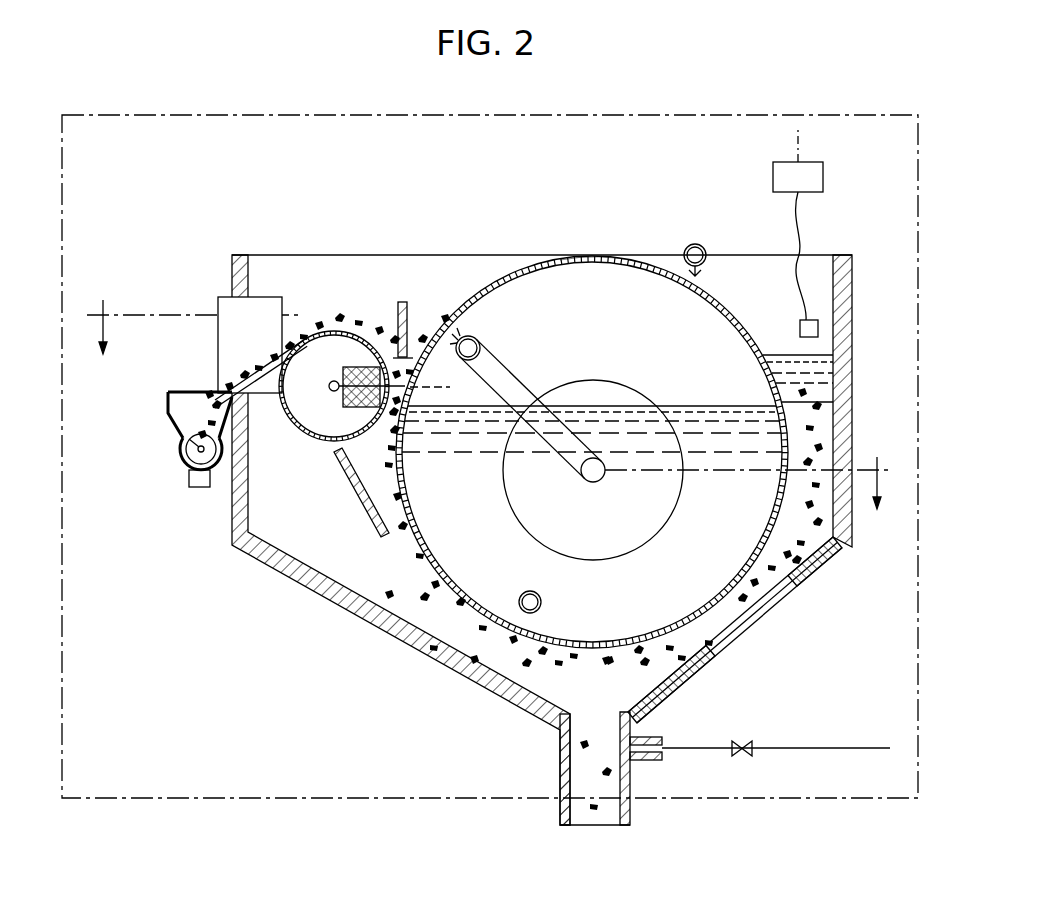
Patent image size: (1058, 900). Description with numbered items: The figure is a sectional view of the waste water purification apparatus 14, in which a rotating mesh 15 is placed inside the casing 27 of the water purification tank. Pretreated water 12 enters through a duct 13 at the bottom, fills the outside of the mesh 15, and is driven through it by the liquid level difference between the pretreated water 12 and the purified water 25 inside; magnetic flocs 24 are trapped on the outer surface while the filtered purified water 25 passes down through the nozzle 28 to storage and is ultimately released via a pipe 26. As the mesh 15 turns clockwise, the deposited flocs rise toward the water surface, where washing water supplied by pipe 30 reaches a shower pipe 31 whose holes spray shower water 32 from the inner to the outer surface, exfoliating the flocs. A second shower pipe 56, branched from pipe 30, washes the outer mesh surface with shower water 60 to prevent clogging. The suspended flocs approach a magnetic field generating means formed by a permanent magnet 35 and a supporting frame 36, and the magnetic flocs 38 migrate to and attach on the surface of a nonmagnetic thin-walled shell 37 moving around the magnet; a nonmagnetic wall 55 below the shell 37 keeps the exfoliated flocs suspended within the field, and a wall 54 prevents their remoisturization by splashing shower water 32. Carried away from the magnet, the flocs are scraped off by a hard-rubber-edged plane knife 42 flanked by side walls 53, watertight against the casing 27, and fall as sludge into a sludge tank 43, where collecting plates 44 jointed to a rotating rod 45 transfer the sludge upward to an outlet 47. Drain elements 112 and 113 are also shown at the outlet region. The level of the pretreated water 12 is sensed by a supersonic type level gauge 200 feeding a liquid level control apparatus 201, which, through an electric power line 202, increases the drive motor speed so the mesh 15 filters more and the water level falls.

The pretreated water 12 is at (595, 812).
The duct 13 is at (560, 778).
The purification apparatus 14 is at (674, 115).
The mesh 15 is at (650, 257).
The magnetic flocs 24 is at (420, 600).
The purified water 25 is at (770, 440).
The pipe 26 is at (545, 602).
The casing 27 is at (232, 262).
The nozzle 28 is at (638, 392).
The pipe 30 is at (507, 440).
The shower pipe 31 is at (487, 357).
The shower water 32 is at (480, 338).
The permanent magnet 35 is at (381, 410).
The supporting frame 36 is at (367, 407).
The thin-walled shell 37 is at (331, 382).
The magnetic flocs 38 is at (390, 350).
The plane knife 42 is at (212, 395).
The sludge tank 43 is at (168, 400).
The collecting plates 44 is at (185, 467).
The rod 45 is at (185, 448).
The outlet 47 is at (196, 490).
The side walls 53 is at (165, 315).
The wall 54 is at (408, 320).
The wall 55 is at (362, 510).
The shower pipe 56 is at (700, 245).
The shower water 60 is at (705, 272).
The valve 112 is at (745, 757).
The drain pipe 113 is at (688, 746).
The supersonic type level gauge 200 is at (818, 330).
The liquid level control apparatus 201 is at (823, 177).
The electric power line 202 is at (800, 142).